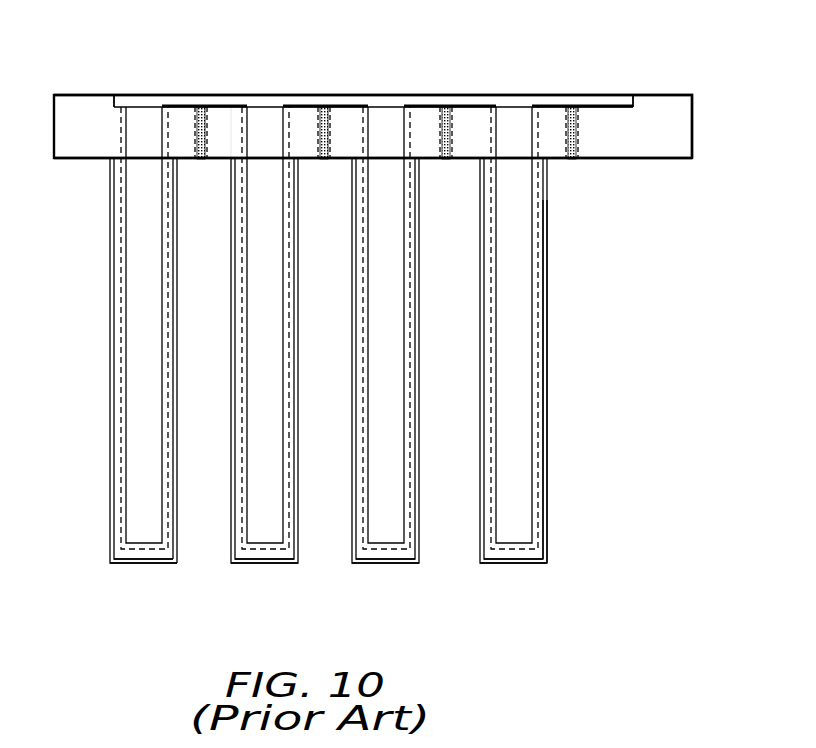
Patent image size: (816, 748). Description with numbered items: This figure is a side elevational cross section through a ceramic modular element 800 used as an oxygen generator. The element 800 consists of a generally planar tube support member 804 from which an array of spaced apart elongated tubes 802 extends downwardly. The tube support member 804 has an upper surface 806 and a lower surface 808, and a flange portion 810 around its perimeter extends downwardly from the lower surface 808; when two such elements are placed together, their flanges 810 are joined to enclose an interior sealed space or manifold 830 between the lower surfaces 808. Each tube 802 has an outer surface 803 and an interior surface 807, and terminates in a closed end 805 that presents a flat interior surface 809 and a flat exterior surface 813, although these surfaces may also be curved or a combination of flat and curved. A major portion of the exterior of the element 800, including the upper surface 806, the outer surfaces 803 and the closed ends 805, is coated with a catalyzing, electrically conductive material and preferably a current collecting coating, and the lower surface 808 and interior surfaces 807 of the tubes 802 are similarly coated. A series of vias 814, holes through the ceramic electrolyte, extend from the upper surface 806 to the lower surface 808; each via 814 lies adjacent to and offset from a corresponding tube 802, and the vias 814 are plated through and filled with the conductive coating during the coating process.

The ceramic modular element 800 is at (642, 45).
The elongated tubes 802 is at (542, 258).
The outer surfaces of the tubes 803 is at (542, 372).
The tube support member 804 is at (683, 125).
The closed ends 805 is at (170, 567).
The upper surface 806 is at (683, 160).
The interior surface 807 is at (162, 396).
The lower surface 808 is at (683, 94).
The flat interior surface 809 is at (138, 534).
The flange portion 810 is at (83, 113).
The flat exterior surface 813 is at (117, 565).
The vias 814 is at (200, 105).
The manifold 830 is at (254, 85).